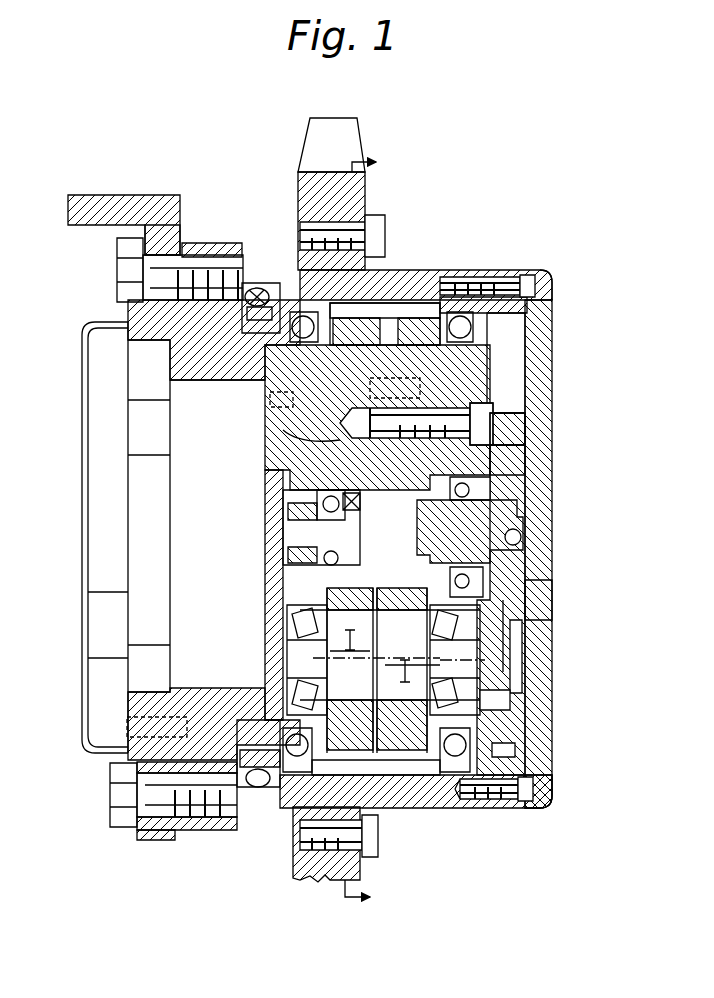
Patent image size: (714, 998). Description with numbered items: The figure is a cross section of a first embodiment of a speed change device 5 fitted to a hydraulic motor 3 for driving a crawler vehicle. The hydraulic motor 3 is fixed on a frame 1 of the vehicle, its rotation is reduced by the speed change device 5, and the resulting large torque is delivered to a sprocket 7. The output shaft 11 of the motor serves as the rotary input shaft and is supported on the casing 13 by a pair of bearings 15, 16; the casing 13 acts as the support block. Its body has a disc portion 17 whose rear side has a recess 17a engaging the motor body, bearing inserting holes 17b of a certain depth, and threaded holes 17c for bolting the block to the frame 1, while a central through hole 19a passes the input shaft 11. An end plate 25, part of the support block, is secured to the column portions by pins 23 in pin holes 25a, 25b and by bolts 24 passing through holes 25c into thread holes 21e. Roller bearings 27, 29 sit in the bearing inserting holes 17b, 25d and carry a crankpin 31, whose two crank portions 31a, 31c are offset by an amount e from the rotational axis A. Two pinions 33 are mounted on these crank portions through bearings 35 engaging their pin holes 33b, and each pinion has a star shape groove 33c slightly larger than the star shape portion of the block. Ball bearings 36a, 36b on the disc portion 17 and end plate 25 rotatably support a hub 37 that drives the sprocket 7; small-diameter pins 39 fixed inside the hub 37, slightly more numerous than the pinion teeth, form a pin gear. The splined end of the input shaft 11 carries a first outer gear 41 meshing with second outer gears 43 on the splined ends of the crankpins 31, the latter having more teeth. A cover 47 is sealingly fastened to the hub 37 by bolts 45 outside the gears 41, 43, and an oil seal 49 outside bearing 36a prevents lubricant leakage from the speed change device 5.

The frame 1 is at (127, 203).
The hydraulic motor 3 is at (86, 535).
The speed change device 5 is at (556, 334).
The sprocket 7 is at (306, 151).
The output shaft 11 is at (292, 526).
The casing 13 is at (217, 233).
The bearing 15 is at (284, 512).
The bearing 16 is at (493, 488).
The disc portion 17 is at (198, 243).
The recess 17a is at (205, 380).
The bearing inserting holes 17b is at (290, 642).
The threaded holes 17c is at (233, 243).
The central through hole 19a is at (300, 558).
The thread holes 21e is at (300, 442).
The pins 23 is at (499, 411).
The bolts 24 is at (495, 433).
The end plate 25 is at (500, 362).
The pin hole 25a is at (554, 414).
The pin hole 25b is at (554, 414).
The through holes 25c is at (505, 462).
The bearing inserting holes 25d is at (518, 637).
The roller bearing 27 is at (293, 622).
The roller bearing 29 is at (550, 765).
The crankpin 31 is at (545, 684).
The crank portion 31a is at (395, 745).
The crank portion 31c is at (455, 790).
The pinion 33 is at (408, 340).
The pin holes 33b is at (272, 674).
The star shape groove 33c is at (380, 300).
The bearings 35 is at (290, 820).
The ball bearing 36a is at (261, 380).
The ball bearing 36b is at (505, 320).
The hub 37 is at (500, 270).
The pins 39 is at (393, 313).
The first outer gear 41 is at (513, 557).
The second outer gears 43 is at (525, 715).
The bolts 45 is at (546, 272).
The cover 47 is at (542, 600).
The oil seal 49 is at (262, 285).
The rotational axis A is at (503, 672).
The eccentricity amount e is at (385, 660).